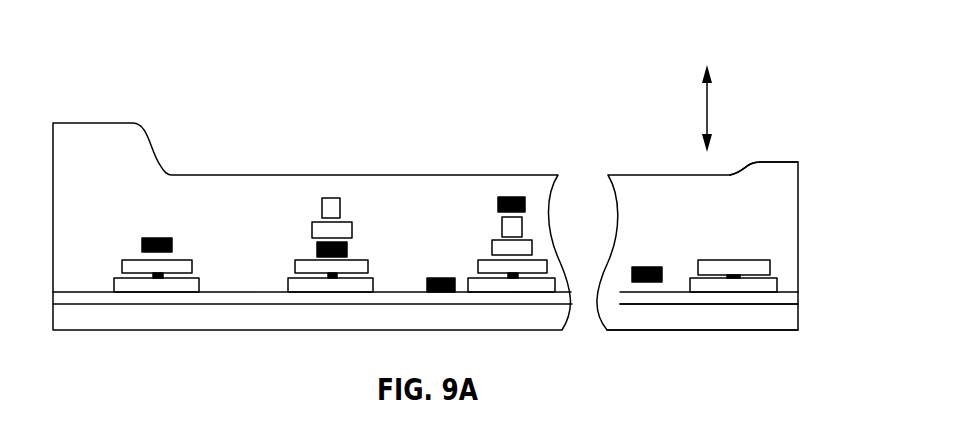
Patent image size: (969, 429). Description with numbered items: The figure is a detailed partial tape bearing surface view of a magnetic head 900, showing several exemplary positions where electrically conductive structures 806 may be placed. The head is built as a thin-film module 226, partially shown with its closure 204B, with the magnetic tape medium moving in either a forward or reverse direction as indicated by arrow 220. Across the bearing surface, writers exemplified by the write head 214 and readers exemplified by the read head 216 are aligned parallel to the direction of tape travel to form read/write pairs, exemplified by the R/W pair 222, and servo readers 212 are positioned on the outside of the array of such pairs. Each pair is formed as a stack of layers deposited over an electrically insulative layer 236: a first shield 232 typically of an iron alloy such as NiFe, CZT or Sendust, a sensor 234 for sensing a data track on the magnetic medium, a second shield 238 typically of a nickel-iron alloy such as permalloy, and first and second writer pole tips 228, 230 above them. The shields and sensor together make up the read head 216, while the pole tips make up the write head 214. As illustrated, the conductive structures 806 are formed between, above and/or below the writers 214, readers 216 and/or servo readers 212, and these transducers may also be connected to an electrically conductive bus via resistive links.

The magnetic head 900 is at (136, 71).
The servo reader 212 is at (194, 252).
The R/W pair 222 is at (341, 156).
The second writer pole tip 230 is at (322, 200).
The first writer pole tip 228 is at (312, 232).
The write head 214 is at (358, 200).
The second shield 238 is at (295, 265).
The sensor 234 is at (284, 270).
The first shield 232 is at (288, 285).
The read head 216 is at (418, 280).
The electrically conductive structure 806 is at (142, 245).
The arrow 220 is at (709, 112).
The closure 204B is at (775, 163).
The thin-film module 226 is at (633, 331).
The electrically insulative layer 236 is at (732, 305).